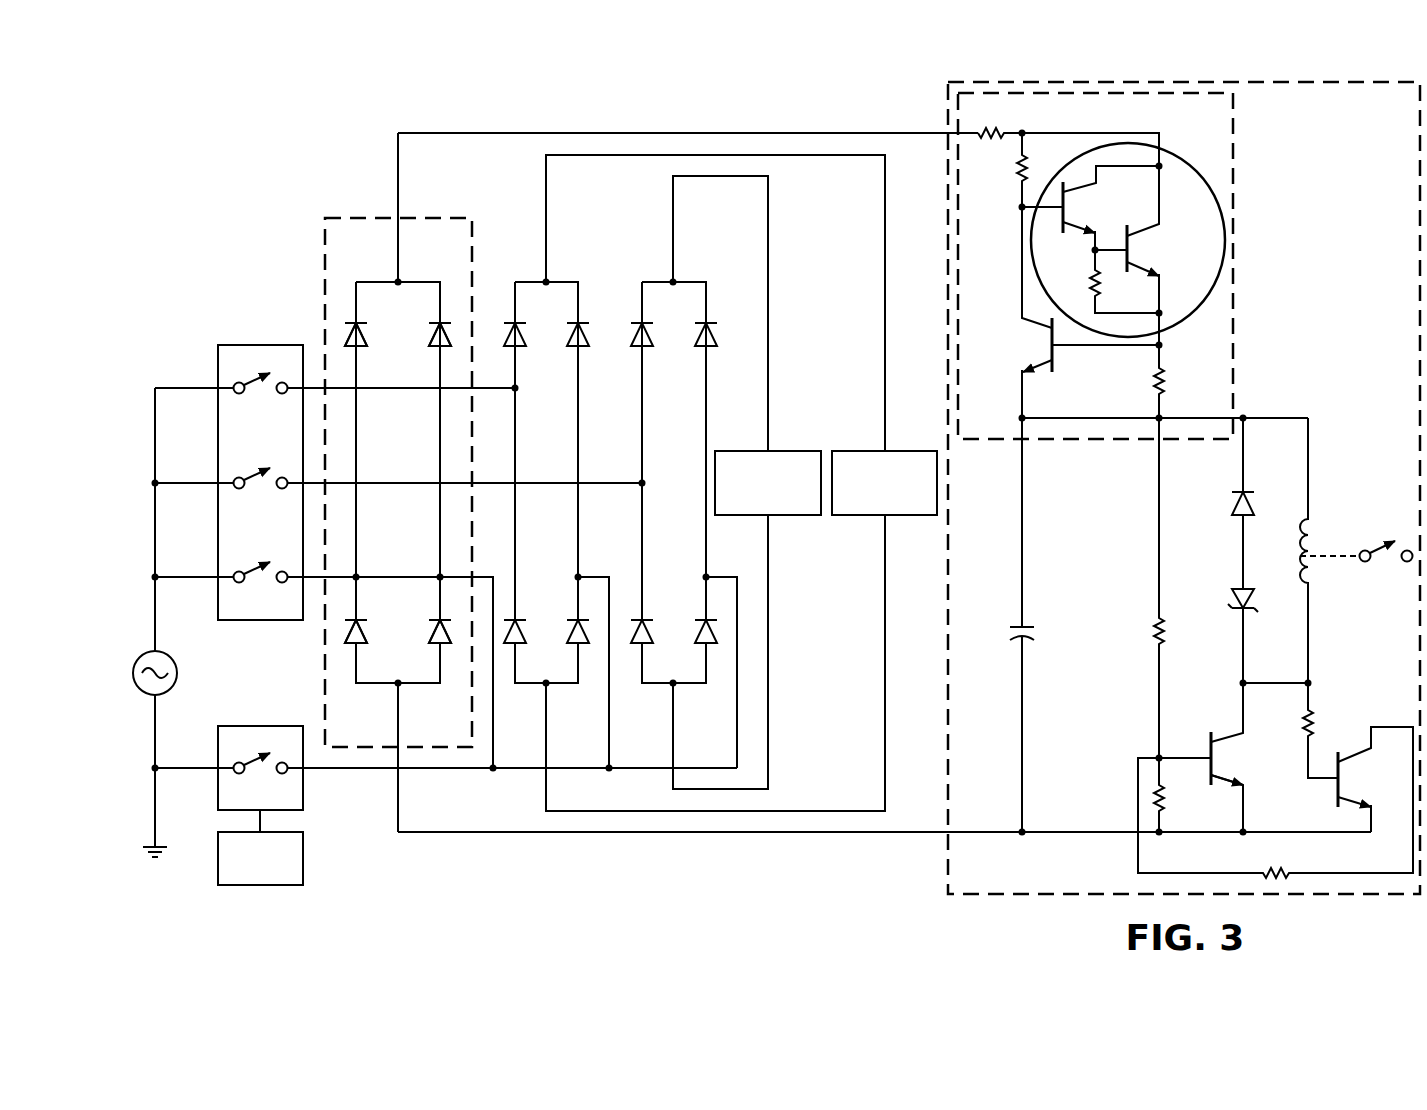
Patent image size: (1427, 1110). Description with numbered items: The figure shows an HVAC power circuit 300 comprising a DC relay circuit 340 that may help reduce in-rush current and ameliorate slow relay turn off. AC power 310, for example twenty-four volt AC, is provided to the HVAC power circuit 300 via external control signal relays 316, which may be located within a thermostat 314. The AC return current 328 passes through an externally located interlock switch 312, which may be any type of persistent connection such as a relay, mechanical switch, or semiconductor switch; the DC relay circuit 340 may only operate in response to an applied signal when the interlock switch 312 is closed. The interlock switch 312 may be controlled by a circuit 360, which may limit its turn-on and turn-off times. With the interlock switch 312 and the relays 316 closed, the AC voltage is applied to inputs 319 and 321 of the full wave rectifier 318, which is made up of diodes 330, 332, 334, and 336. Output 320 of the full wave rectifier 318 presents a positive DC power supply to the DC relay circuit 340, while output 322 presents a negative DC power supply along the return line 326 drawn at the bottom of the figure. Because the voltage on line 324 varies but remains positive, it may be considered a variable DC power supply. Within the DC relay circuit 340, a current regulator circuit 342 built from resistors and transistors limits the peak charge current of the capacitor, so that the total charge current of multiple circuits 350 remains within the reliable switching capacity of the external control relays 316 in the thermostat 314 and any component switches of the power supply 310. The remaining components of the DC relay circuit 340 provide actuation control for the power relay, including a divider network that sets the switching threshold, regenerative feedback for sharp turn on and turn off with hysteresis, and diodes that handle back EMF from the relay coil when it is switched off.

The HVAC power circuit 300 is at (215, 152).
The AC power 310 is at (148, 692).
The interlock switch 312 is at (250, 724).
The thermostat 314 is at (258, 342).
The external control signal relays 316 is at (268, 567).
The full wave rectifier 318 is at (405, 482).
The input 319 is at (362, 575).
The output 320 is at (396, 280).
The input 321 is at (438, 575).
The output 322 is at (396, 686).
The line 324 is at (672, 132).
The negative DC bus 326 is at (676, 835).
The 24 VAC return current 328 is at (197, 772).
The diode 330 is at (364, 330).
The diode 332 is at (432, 336).
The diode 334 is at (364, 626).
The diode 336 is at (432, 634).
The DC relay circuit 340 is at (1184, 488).
The current regulator circuit 342 is at (1240, 252).
The circuits 350 is at (791, 449).
The circuit 360 is at (260, 847).